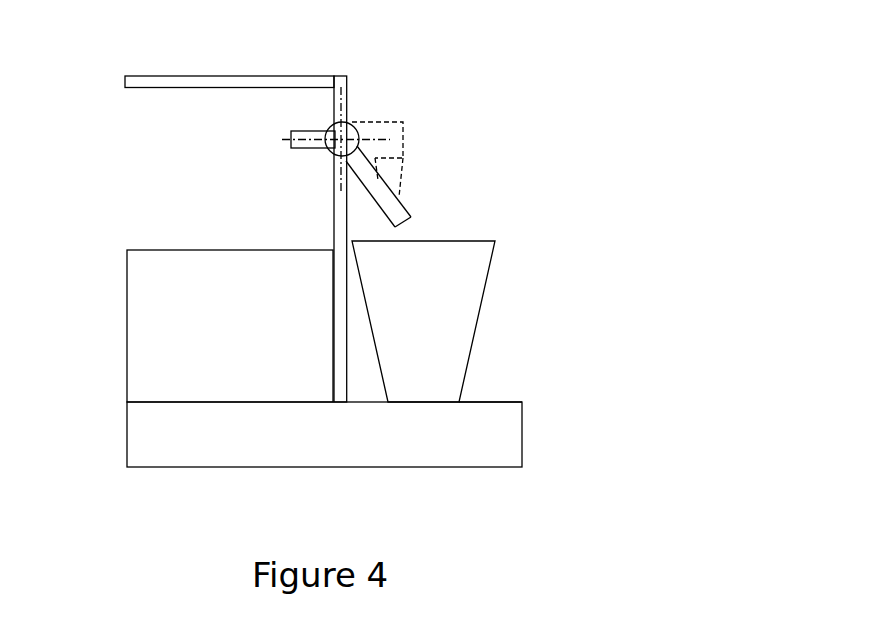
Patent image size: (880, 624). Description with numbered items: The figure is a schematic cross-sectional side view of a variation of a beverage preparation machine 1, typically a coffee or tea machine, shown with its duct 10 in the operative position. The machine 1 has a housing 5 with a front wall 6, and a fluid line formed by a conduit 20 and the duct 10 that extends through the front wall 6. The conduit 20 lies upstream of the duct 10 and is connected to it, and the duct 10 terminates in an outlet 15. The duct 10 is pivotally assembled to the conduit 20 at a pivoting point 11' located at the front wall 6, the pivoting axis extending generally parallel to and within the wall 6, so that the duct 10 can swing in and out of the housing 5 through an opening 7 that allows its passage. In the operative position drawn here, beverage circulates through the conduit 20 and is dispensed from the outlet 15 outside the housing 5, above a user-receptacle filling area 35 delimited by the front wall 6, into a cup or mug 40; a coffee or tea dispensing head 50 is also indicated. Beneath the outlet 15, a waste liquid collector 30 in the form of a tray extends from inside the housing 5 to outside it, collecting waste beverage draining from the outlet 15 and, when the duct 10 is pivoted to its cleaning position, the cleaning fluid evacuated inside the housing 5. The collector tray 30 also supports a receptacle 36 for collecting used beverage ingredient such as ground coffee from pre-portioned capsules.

The beverage preparation machine 1 is at (92, 42).
The housing 5 is at (339, 87).
The front wall 6 is at (347, 103).
The opening 7 is at (340, 207).
The conduit 20 is at (297, 132).
The pivoting point 11' is at (383, 120).
The coffee or tea dispensing head 50 is at (413, 152).
The duct 10 is at (387, 197).
The outlet 15 is at (404, 221).
The receptacle 36 is at (230, 326).
The cup or mug 40 is at (423, 321).
The waste liquid collector 30 is at (145, 427).
The user-receptacle filling area 35 is at (478, 400).